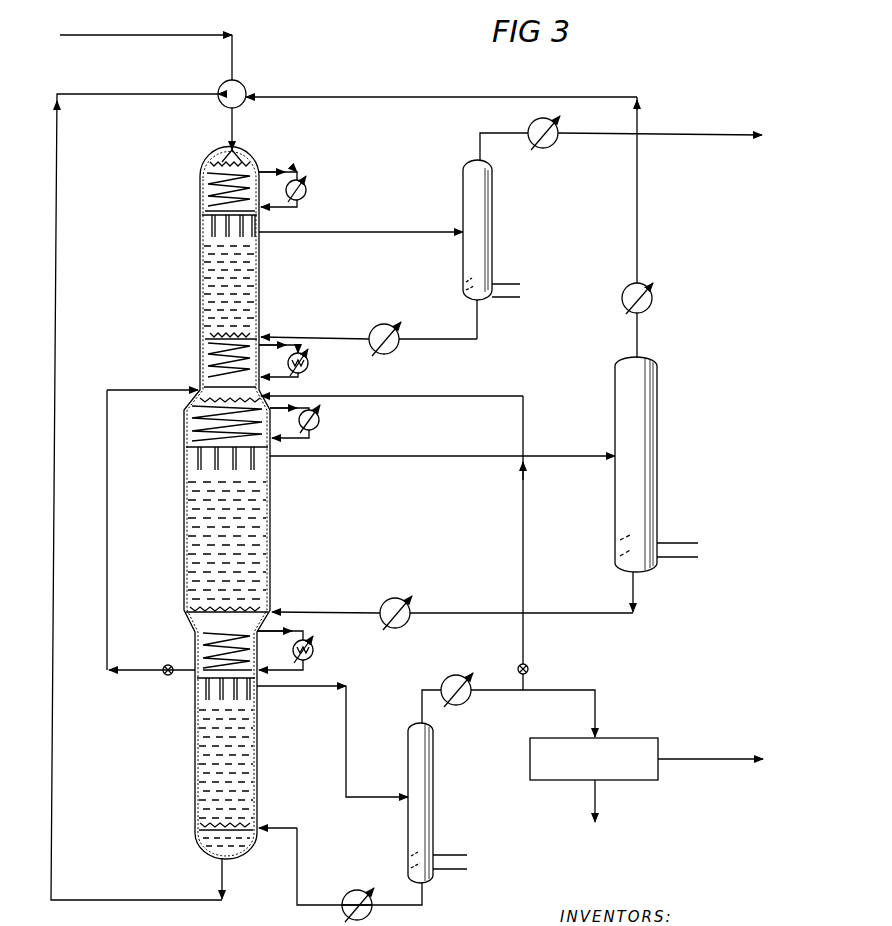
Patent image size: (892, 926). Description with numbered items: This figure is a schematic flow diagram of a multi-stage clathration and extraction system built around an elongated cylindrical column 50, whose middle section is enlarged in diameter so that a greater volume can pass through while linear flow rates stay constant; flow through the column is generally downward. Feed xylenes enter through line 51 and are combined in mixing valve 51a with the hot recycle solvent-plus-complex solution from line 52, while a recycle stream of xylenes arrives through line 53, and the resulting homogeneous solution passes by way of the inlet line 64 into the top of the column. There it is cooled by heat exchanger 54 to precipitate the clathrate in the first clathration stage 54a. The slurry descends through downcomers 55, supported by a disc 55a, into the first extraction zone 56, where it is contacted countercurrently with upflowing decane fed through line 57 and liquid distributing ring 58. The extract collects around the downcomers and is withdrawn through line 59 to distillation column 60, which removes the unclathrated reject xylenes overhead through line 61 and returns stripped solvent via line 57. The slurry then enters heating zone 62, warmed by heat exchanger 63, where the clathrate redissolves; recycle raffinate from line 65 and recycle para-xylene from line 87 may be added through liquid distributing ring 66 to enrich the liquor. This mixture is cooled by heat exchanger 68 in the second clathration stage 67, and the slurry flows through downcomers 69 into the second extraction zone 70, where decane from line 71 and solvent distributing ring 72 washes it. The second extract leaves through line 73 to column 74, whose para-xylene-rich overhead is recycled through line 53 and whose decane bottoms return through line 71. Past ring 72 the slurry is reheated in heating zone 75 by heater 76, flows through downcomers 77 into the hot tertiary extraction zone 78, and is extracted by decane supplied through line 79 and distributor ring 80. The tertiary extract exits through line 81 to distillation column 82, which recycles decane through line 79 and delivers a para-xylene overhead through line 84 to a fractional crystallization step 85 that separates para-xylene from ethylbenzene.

The column 50 is at (195, 279).
The line 51 is at (200, 35).
The mixing valve 51a is at (241, 84).
The line 52 is at (62, 138).
The line 53 is at (384, 100).
The heat exchanger 54 is at (270, 172).
The first clathration stage 54a is at (207, 183).
The disc 55a is at (212, 211).
The downcomers 55 is at (205, 226).
The first extraction zone 56 is at (237, 279).
The line 57 is at (348, 324).
The liquid distributing ring 58 is at (207, 337).
The line 59 is at (372, 236).
The distillation column 60 is at (490, 238).
The line 61 is at (598, 138).
The heating zone 62 is at (210, 355).
The heat exchanger 63 is at (309, 366).
The feed inlet line 64 is at (236, 136).
The line 65 is at (107, 448).
The liquid distributing ring 66 is at (205, 388).
The second clathration stage 67 is at (192, 417).
The heat exchanger 68 is at (321, 424).
The downcomers 69 is at (186, 458).
The second extraction zone 70 is at (208, 538).
The line 71 is at (342, 610).
The solvent distributing ring 72 is at (188, 612).
The line 73 is at (348, 458).
The column 74 is at (642, 366).
The heating zone 75 is at (200, 633).
The heater 76 is at (314, 655).
The downcomers 77 is at (200, 687).
The tertiary extraction zone 78 is at (214, 742).
The line 79 is at (296, 874).
The distributor ring 80 is at (205, 831).
The line 81 is at (346, 724).
The distillation column 82 is at (428, 800).
The line 84 is at (572, 672).
The fractional crystallization step 85 is at (641, 738).
The line 87 is at (414, 394).